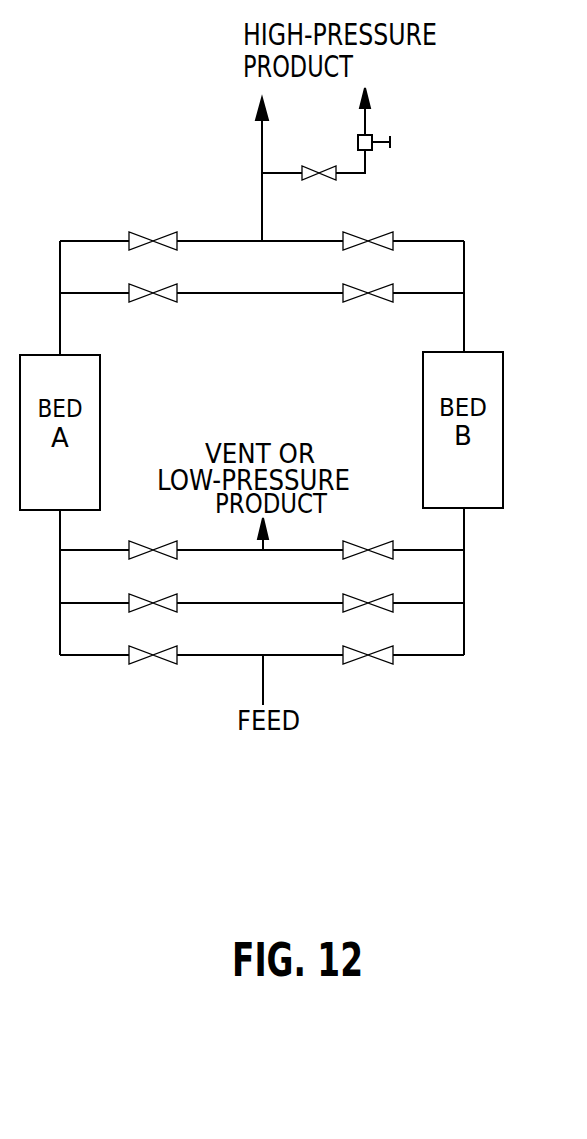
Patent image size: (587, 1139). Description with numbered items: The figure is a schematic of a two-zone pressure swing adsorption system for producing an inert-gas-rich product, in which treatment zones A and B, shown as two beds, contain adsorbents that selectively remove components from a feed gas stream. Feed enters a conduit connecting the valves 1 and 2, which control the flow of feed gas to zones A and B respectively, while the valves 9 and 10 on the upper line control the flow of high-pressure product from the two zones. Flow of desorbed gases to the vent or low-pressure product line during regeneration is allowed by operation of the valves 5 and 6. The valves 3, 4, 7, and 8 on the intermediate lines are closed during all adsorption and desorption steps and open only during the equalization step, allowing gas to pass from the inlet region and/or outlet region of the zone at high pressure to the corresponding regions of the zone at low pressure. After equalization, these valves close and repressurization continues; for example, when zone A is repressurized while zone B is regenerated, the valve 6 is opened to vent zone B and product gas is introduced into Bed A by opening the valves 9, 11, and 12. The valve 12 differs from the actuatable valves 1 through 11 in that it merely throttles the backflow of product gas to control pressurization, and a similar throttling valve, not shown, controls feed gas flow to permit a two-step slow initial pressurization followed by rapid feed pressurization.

The feed valve 1 is at (154, 651).
The feed valve 2 is at (368, 651).
The equalization valve 3 is at (154, 599).
The equalization valve 4 is at (368, 599).
The vent valve 5 is at (154, 545).
The vent valve 6 is at (368, 546).
The equalization valve 7 is at (156, 289).
The equalization valve 8 is at (370, 289).
The product valve 9 is at (156, 236).
The product valve 10 is at (370, 236).
The product backflow valve 11 is at (319, 181).
The throttling valve 12 is at (398, 122).